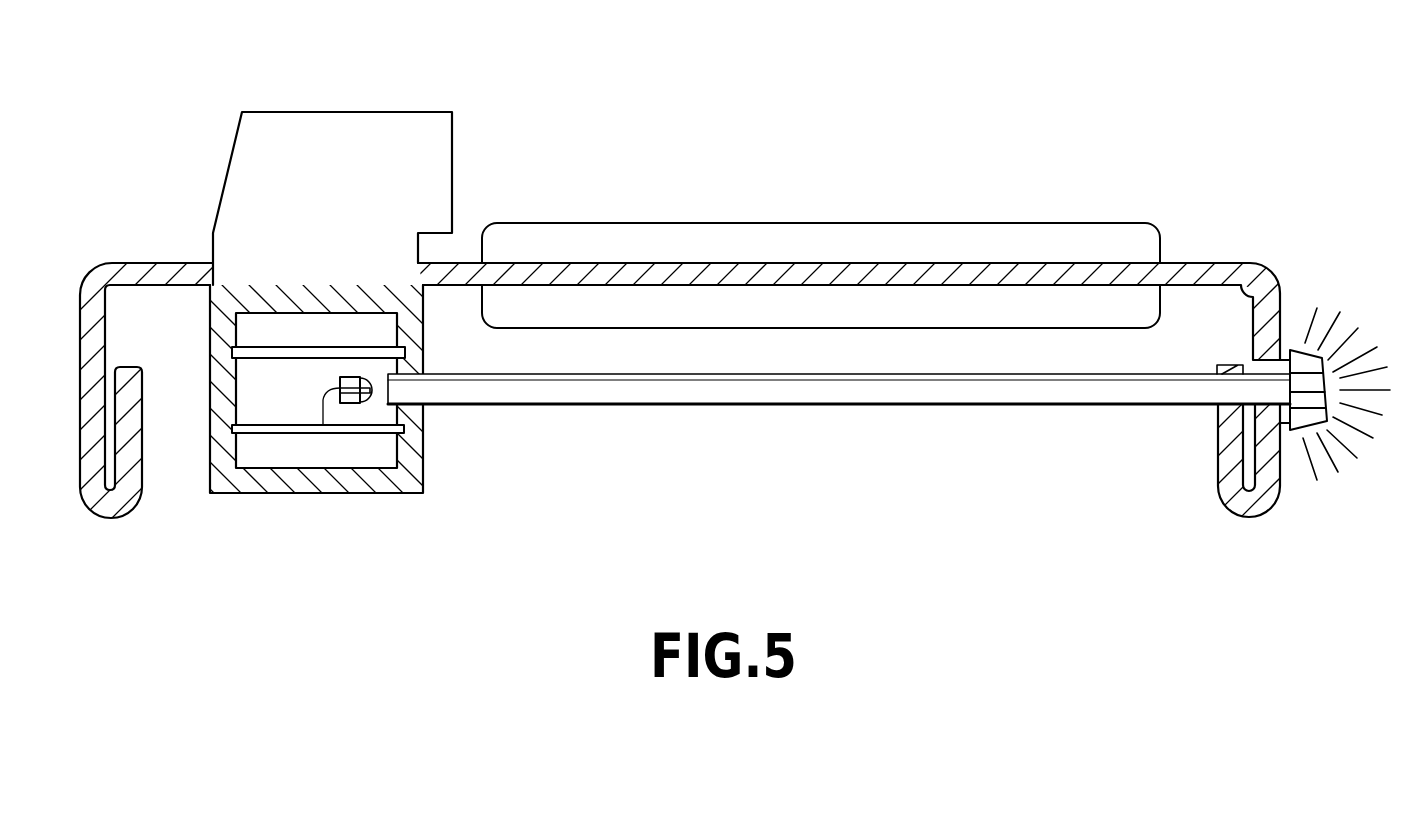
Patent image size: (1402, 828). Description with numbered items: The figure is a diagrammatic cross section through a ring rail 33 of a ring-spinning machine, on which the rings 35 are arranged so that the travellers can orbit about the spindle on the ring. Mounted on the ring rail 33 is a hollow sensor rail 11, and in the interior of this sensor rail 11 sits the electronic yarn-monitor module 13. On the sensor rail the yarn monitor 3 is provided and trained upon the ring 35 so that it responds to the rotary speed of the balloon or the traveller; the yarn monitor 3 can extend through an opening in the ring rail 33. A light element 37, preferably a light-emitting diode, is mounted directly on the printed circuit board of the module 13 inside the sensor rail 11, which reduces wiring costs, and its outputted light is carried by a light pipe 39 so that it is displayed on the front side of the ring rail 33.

The yarn monitor 3 is at (432, 140).
The sensor rail 11 is at (335, 493).
The electronic yarn-monitor module 13 is at (284, 347).
The ring rail 33 is at (1245, 263).
The ring 35 is at (1137, 245).
The light element 37 is at (350, 403).
The light pipe 39 is at (944, 394).